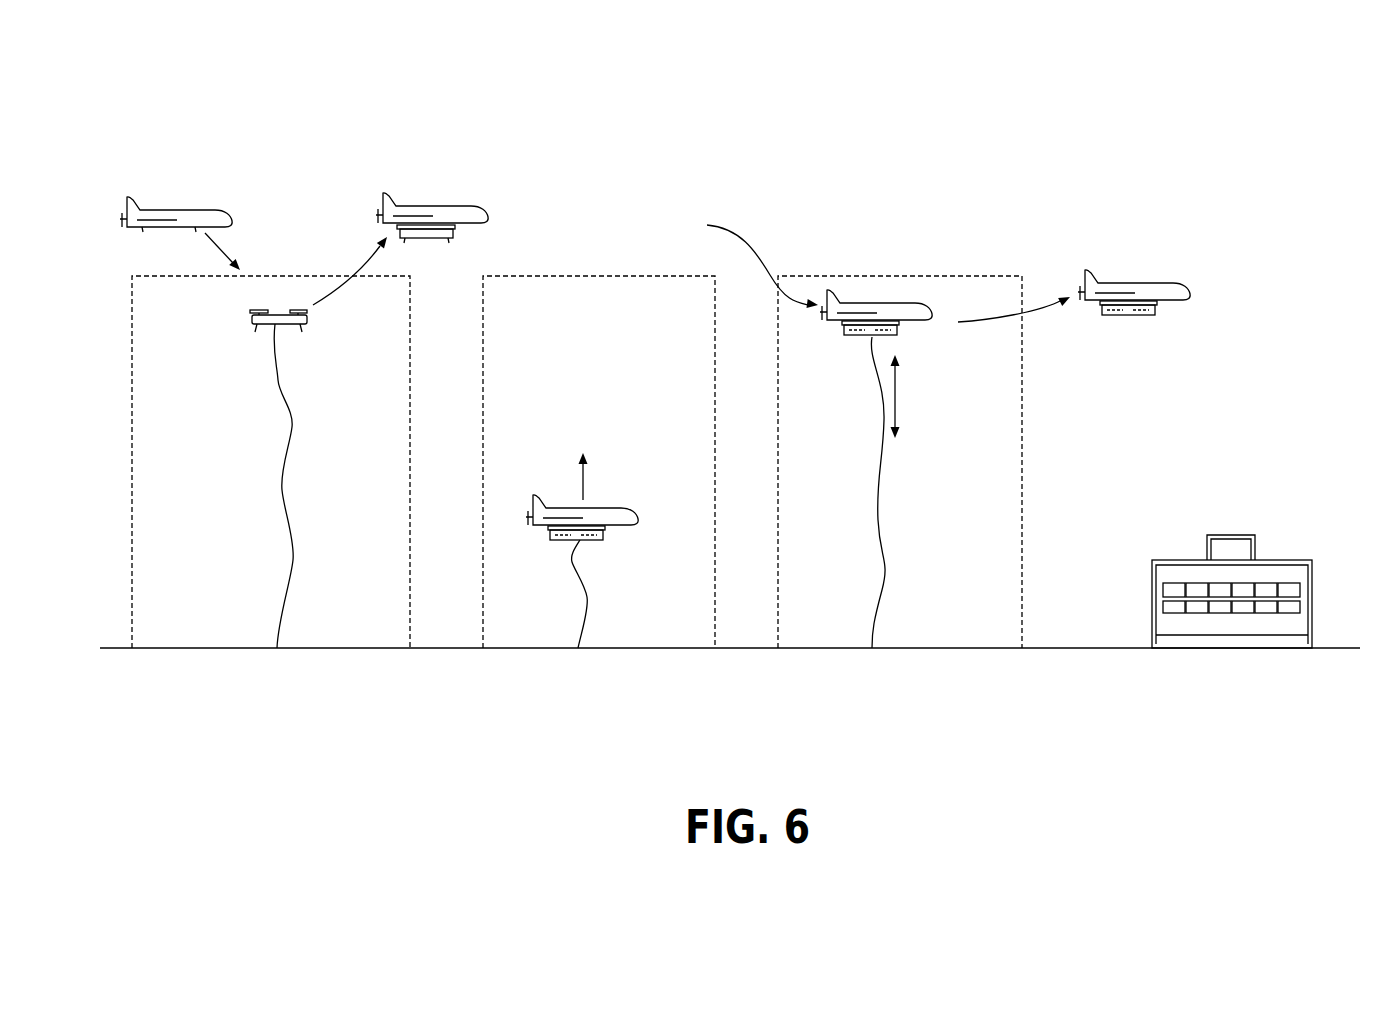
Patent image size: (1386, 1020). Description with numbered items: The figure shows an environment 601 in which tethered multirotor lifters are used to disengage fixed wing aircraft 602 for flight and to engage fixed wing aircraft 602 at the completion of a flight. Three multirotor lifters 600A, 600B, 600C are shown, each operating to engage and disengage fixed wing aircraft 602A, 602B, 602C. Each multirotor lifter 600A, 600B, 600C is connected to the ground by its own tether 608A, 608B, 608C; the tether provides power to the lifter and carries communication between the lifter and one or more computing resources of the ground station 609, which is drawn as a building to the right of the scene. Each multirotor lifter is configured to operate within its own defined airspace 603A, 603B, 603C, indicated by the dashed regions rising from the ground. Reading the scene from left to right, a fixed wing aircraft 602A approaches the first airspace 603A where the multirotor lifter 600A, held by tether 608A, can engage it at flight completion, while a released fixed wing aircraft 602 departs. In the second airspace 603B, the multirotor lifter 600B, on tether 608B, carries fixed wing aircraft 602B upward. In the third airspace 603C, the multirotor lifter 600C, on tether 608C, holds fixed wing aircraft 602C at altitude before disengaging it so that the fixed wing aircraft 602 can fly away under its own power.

The environment 601 is at (1043, 134).
The fixed wing aircraft 602 is at (453, 208).
The fixed wing aircraft 602A is at (185, 210).
The fixed wing aircraft 602B is at (567, 508).
The fixed wing aircraft 602C is at (863, 303).
The multirotor lifter 600A is at (263, 327).
The multirotor lifter 600B is at (605, 538).
The multirotor lifter 600C is at (902, 338).
The tether 608A is at (283, 525).
The tether 608B is at (589, 592).
The tether 608C is at (880, 530).
The defined airspace 603A is at (412, 618).
The defined airspace 603B is at (717, 618).
The defined airspace 603C is at (1024, 618).
The ground station 609 is at (1240, 535).